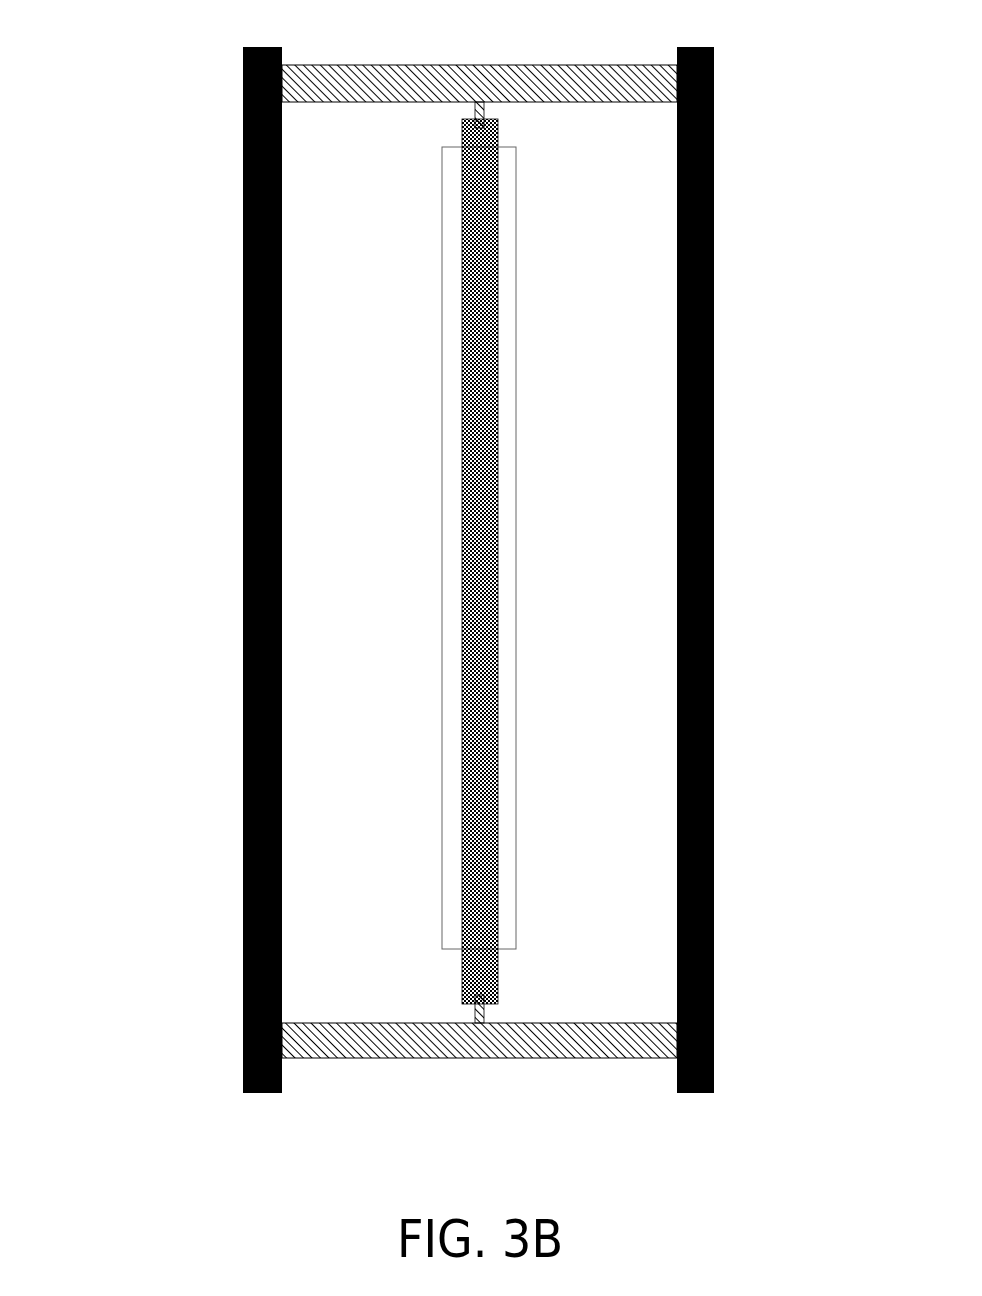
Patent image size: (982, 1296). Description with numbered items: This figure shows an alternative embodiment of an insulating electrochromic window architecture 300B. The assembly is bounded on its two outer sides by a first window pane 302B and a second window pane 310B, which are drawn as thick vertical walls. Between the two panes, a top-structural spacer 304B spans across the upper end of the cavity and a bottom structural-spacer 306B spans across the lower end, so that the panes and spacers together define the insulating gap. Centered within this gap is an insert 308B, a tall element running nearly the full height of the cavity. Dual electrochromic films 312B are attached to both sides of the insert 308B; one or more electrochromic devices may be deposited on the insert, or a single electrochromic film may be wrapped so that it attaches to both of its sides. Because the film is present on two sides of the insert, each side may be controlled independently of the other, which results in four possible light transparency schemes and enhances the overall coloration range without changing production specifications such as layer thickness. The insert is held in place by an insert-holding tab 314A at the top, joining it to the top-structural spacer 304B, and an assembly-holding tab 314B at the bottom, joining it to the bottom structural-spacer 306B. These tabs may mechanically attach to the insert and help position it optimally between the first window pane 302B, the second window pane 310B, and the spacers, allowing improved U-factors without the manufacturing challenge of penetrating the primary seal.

The insulating electrochromic window architecture 300B is at (170, 1104).
The first window pane 302B is at (243, 571).
The top-structural spacer 304B is at (480, 65).
The bottom structural-spacer 306B is at (480, 1058).
The insert 308B is at (480, 562).
The second window pane 310B is at (714, 571).
The dual electrochromic films 312B is at (516, 300).
The insert-holding tab 314A is at (481, 118).
The assembly-holding tab 314B is at (484, 1010).